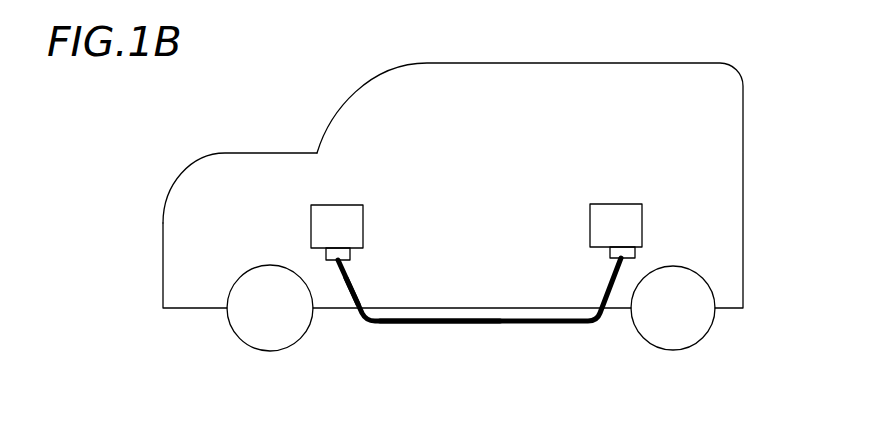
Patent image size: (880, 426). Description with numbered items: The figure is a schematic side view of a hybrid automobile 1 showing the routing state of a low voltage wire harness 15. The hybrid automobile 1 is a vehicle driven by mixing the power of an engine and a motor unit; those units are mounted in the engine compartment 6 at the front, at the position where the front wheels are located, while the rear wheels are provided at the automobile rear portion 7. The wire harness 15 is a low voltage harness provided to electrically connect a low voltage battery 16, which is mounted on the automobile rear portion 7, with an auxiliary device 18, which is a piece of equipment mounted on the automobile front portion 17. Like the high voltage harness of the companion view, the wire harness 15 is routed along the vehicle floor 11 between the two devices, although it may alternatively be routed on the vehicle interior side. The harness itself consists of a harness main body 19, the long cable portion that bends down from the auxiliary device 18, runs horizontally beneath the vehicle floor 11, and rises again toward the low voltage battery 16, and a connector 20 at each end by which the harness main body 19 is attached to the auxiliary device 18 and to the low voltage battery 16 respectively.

The hybrid automobile 1 is at (597, 62).
The engine compartment 6 is at (178, 286).
The automobile rear portion 7 is at (727, 278).
The vehicle floor 11 is at (552, 310).
The wire harness 15 is at (393, 326).
The low voltage battery 16 is at (625, 212).
The automobile front portion 17 is at (292, 163).
The auxiliary device 18 is at (348, 212).
The harness main body 19 is at (358, 297).
The connector 20 is at (327, 253).